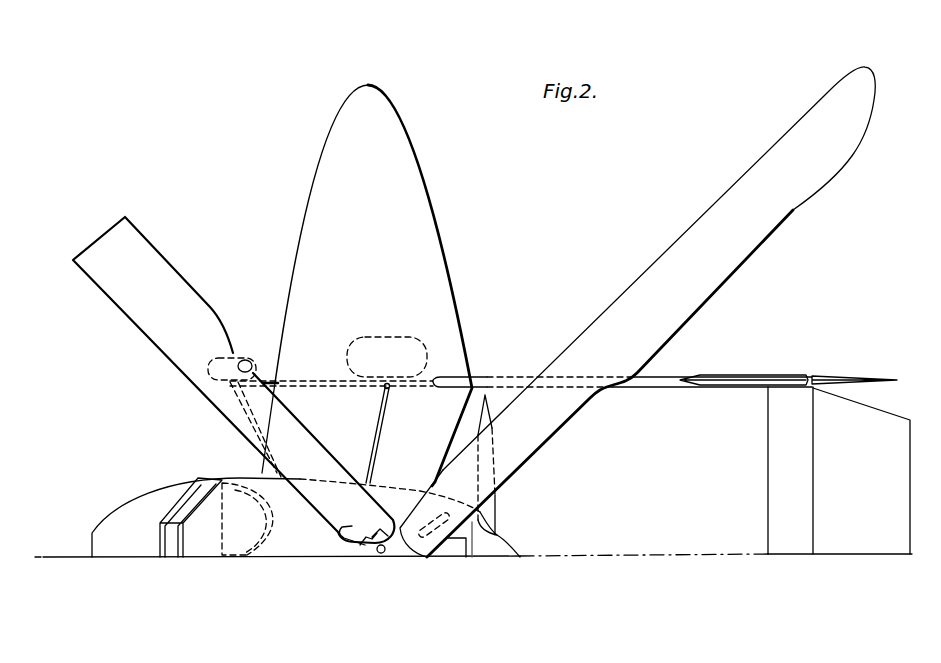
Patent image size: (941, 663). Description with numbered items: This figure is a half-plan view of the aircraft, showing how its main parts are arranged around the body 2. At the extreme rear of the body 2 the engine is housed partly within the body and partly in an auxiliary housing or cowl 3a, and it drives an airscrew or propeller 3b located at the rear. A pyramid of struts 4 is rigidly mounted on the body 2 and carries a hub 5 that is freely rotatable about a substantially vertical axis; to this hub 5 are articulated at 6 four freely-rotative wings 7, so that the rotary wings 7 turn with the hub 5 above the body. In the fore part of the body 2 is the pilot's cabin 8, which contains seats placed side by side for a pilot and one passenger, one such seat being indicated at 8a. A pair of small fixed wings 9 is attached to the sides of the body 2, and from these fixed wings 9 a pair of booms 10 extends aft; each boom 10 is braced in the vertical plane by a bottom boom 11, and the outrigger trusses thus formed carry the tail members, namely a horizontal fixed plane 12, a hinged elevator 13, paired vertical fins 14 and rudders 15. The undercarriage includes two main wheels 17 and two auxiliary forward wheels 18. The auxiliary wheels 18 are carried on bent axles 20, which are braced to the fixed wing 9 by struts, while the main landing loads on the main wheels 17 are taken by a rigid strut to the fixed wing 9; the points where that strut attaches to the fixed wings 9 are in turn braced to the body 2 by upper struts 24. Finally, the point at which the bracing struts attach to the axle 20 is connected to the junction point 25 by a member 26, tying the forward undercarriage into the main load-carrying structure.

The body 2 is at (306, 517).
The auxiliary housing or cowl 3a is at (447, 560).
The airscrew or propeller 3b is at (497, 508).
The pyramid of struts 4 is at (347, 538).
The hub 5 is at (390, 555).
The articulation 6 is at (372, 550).
The freely-rotative wing 7 is at (125, 313).
The pilot's cabin 8 is at (191, 517).
The seat 8a is at (240, 545).
The fixed wing 9 is at (367, 285).
The boom 10 is at (640, 383).
The bottom boom 11 is at (413, 388).
The horizontal fixed plane 12 is at (790, 470).
The hinged elevator 13 is at (861, 471).
The vertical fin 14 is at (732, 375).
The rudder 15 is at (851, 374).
The main wheel 17 is at (420, 337).
The auxiliary forward wheel 18 is at (243, 360).
The axle 20 is at (243, 413).
The upper strut 24 is at (373, 437).
The junction point 25 is at (385, 385).
The member 26 is at (305, 377).